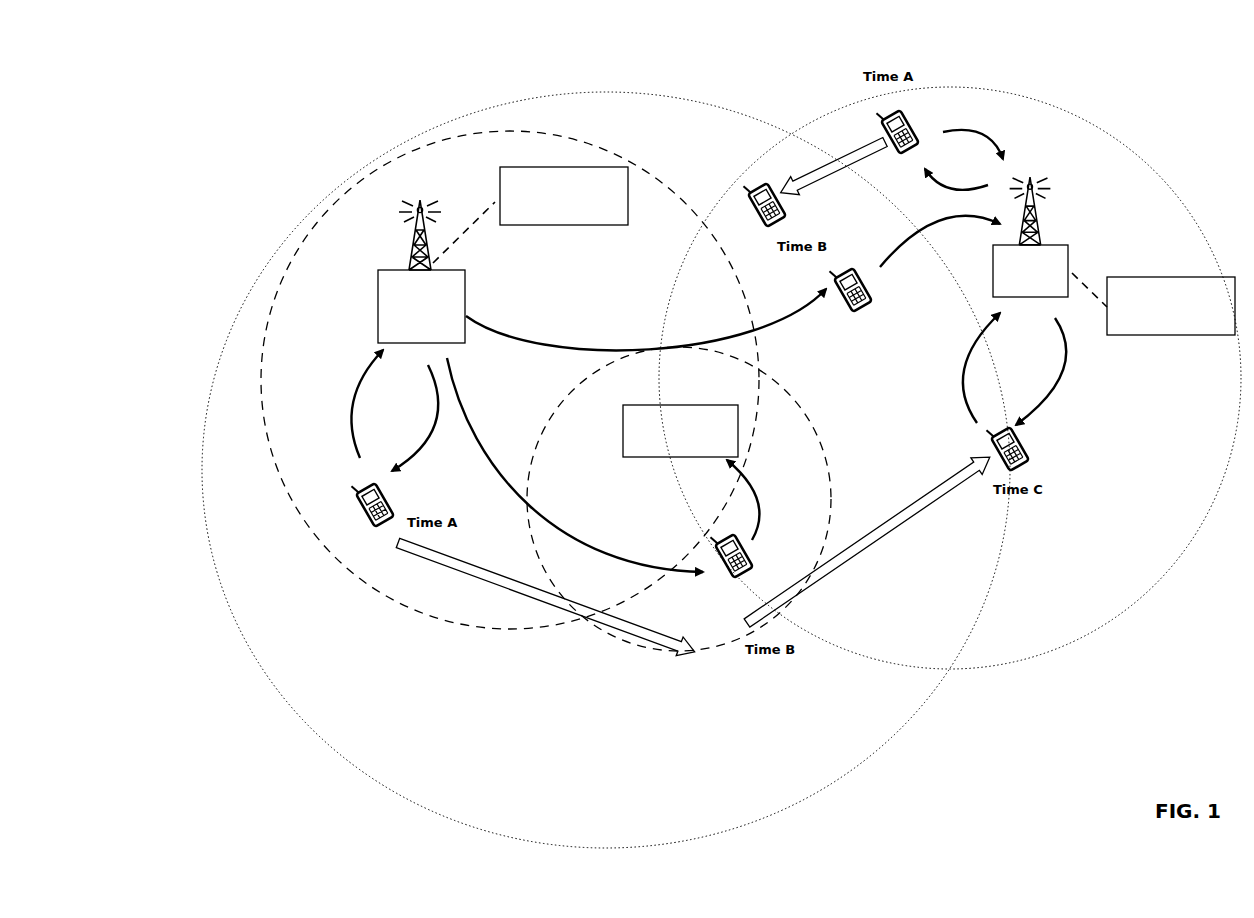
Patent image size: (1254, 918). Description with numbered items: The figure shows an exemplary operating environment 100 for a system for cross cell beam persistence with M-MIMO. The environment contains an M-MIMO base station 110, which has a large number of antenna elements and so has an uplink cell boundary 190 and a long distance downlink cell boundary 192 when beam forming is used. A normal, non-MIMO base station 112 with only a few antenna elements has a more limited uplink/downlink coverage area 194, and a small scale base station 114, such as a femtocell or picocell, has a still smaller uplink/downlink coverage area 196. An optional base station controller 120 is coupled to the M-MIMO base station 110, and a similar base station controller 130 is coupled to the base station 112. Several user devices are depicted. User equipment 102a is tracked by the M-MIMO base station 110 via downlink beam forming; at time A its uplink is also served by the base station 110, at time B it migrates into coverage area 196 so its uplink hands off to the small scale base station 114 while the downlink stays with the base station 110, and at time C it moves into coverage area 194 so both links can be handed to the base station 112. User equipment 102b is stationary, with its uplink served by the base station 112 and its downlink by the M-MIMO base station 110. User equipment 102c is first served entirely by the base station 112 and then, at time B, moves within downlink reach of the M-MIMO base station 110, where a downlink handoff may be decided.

The operating environment 100 is at (1200, 73).
The user equipment 102a is at (698, 549).
The user equipment 102b is at (871, 293).
The user equipment 102c is at (859, 160).
The M-MIMO base station 110 is at (378, 302).
The non-MIMO base station 112 is at (1068, 240).
The small scale base station 114 is at (623, 432).
The base station controller 120 is at (630, 196).
The base station controller 130 is at (1155, 275).
The uplink cell boundary 190 is at (828, 783).
The downlink cell boundary 192 is at (307, 228).
The uplink/downlink coverage area 194 is at (1082, 602).
The uplink/downlink coverage area 196 is at (808, 413).